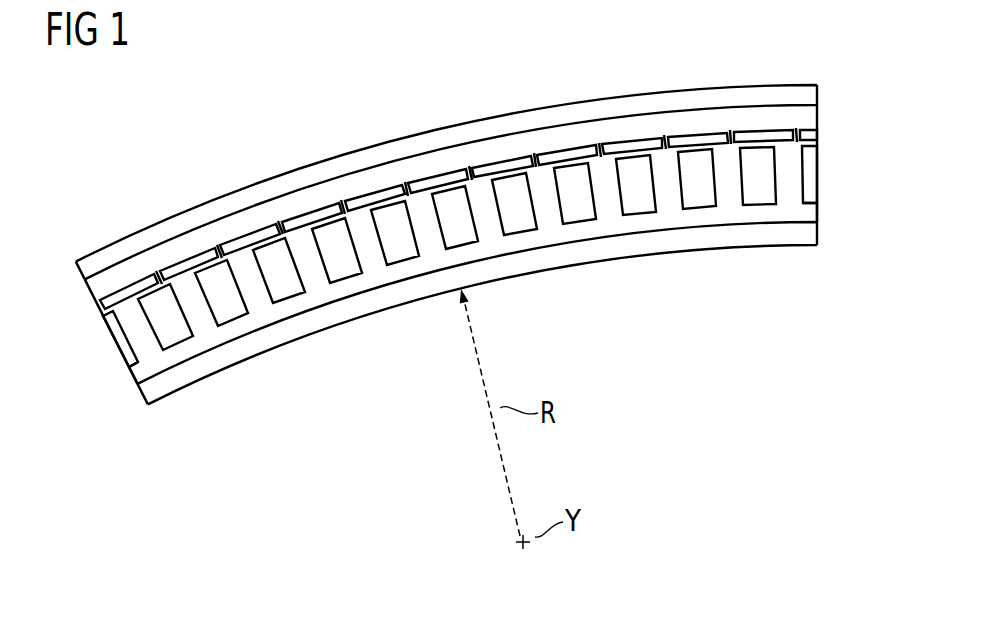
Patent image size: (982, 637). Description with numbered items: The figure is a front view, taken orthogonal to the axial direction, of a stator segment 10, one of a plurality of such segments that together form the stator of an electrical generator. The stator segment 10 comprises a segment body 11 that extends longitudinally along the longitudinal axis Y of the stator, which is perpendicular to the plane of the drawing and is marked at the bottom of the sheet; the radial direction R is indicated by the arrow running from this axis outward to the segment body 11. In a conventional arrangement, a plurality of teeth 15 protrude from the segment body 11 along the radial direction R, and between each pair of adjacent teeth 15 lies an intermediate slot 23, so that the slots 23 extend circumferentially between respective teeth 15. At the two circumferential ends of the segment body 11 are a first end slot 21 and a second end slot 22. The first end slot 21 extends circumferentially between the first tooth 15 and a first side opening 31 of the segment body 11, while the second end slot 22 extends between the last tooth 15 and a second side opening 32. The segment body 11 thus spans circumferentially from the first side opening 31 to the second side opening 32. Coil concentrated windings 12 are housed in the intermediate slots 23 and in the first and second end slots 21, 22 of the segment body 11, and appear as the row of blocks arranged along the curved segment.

The stator segment 10 is at (740, 80).
The segment body 11 is at (798, 216).
The coil concentrated windings 12 is at (808, 160).
The teeth 15 is at (418, 205).
The first end slot 21 is at (120, 368).
The second end slot 22 is at (802, 198).
The intermediate slots 23 is at (505, 195).
The first side opening 31 is at (113, 348).
The second side opening 32 is at (820, 177).